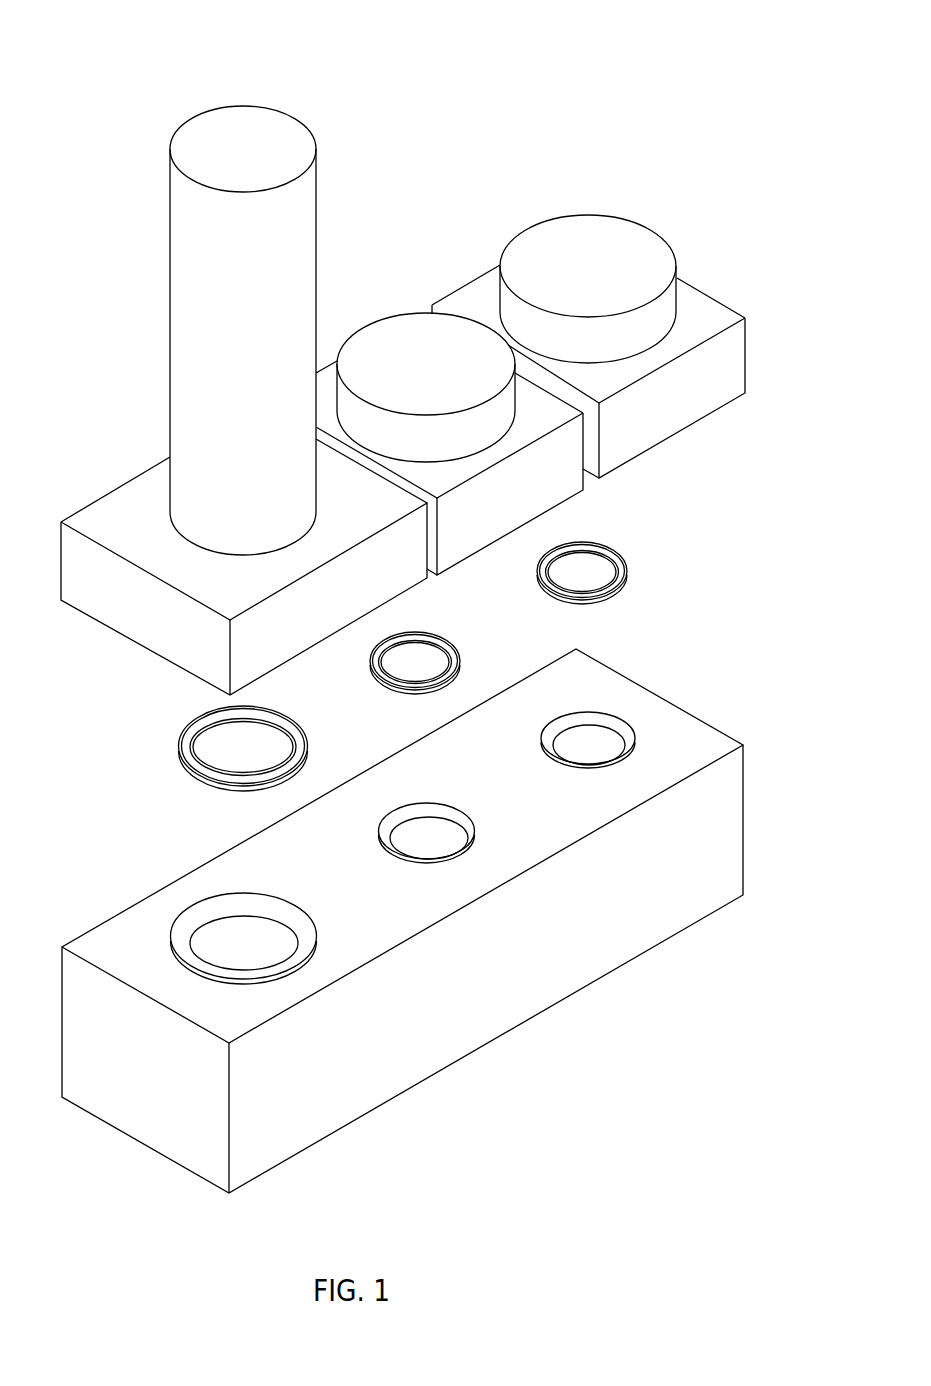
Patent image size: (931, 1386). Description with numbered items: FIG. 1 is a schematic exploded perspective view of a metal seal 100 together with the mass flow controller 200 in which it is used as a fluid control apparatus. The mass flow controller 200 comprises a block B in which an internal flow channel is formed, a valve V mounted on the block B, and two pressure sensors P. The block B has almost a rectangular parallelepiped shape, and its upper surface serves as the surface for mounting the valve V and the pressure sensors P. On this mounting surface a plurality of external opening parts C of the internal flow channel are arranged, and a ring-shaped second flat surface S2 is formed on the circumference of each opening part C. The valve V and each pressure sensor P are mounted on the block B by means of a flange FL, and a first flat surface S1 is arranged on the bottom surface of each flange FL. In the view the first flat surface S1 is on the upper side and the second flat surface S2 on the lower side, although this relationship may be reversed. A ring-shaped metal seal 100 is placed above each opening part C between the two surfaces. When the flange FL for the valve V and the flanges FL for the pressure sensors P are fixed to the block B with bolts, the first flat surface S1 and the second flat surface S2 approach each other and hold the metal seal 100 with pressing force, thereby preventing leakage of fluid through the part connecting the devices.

The mass flow controller 200 is at (652, 94).
The valve V is at (248, 92).
The pressure sensor P is at (398, 280).
The flange FL is at (755, 426).
The first flat surface S1 is at (672, 440).
The metal seal 100 is at (645, 572).
The block B is at (128, 1137).
The second flat surface S2 is at (545, 745).
The opening part C is at (588, 745).